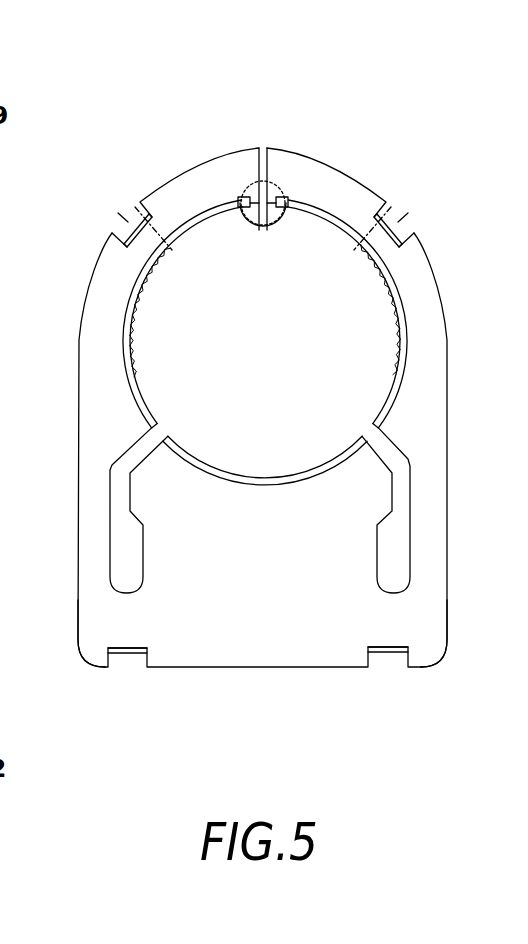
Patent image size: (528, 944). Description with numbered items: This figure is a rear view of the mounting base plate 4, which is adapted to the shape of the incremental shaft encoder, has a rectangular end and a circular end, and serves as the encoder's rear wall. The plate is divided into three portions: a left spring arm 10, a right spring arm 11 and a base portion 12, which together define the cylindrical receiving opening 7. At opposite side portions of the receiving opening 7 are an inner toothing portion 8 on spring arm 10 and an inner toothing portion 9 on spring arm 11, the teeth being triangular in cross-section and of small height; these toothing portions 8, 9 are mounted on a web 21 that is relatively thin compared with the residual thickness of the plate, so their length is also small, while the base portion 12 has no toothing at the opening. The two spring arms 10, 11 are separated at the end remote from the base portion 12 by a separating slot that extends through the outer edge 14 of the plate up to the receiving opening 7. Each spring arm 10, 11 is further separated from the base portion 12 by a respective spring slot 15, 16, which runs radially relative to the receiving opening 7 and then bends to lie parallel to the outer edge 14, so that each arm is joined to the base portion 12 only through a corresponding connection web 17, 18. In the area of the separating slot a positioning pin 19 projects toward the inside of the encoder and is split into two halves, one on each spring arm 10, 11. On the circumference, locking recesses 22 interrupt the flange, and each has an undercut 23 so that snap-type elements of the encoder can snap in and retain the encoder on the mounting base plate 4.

The mounting base plate 4 is at (216, 682).
The receiving opening 7 is at (312, 228).
The inner toothing portion 8 is at (385, 283).
The inner toothing portion 9 is at (158, 272).
The left spring arm 10 is at (424, 405).
The right spring arm 11 is at (98, 393).
The base portion 12 is at (270, 585).
The outer edge 14 is at (197, 153).
The spring slot 15 is at (397, 545).
The spring slot 16 is at (125, 545).
The connection web 17 is at (405, 617).
The connection web 18 is at (125, 613).
The positioning pin 19 is at (256, 246).
The web 21 is at (200, 466).
The locking recesses 22 is at (118, 231).
The undercut 23 is at (110, 236).